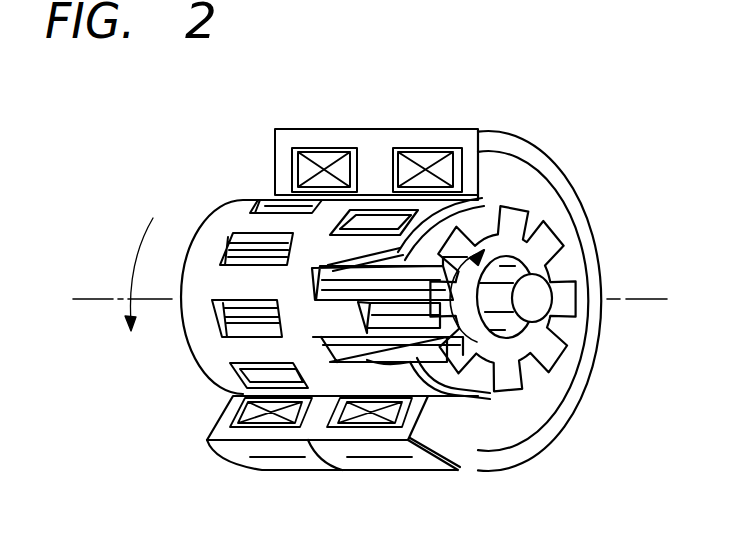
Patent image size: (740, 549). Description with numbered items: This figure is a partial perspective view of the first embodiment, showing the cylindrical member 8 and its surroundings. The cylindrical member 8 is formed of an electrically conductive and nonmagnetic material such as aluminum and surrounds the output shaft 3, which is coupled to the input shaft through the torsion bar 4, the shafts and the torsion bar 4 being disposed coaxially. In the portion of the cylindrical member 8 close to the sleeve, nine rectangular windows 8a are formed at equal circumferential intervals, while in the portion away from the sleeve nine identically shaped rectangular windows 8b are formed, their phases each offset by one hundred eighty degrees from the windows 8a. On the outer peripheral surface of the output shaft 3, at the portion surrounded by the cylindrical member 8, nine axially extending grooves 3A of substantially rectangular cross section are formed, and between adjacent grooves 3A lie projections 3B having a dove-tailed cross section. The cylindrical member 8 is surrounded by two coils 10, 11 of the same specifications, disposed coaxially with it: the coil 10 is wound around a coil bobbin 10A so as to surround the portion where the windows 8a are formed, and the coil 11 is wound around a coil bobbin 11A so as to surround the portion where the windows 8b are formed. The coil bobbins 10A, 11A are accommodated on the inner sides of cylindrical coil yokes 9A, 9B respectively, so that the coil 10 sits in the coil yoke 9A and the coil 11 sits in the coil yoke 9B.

The output shaft 3 is at (560, 250).
The grooves 3A is at (537, 222).
The projections 3B is at (560, 350).
The torsion bar 4 is at (548, 290).
The cylindrical member 8 is at (224, 203).
The windows 8a is at (333, 272).
The windows 8b is at (242, 326).
The coil yoke 9A is at (392, 462).
The coil yoke 9B is at (265, 452).
The coil 10 is at (428, 150).
The coil bobbin 10A is at (457, 170).
The coil 11 is at (318, 150).
The coil bobbin 11A is at (292, 168).